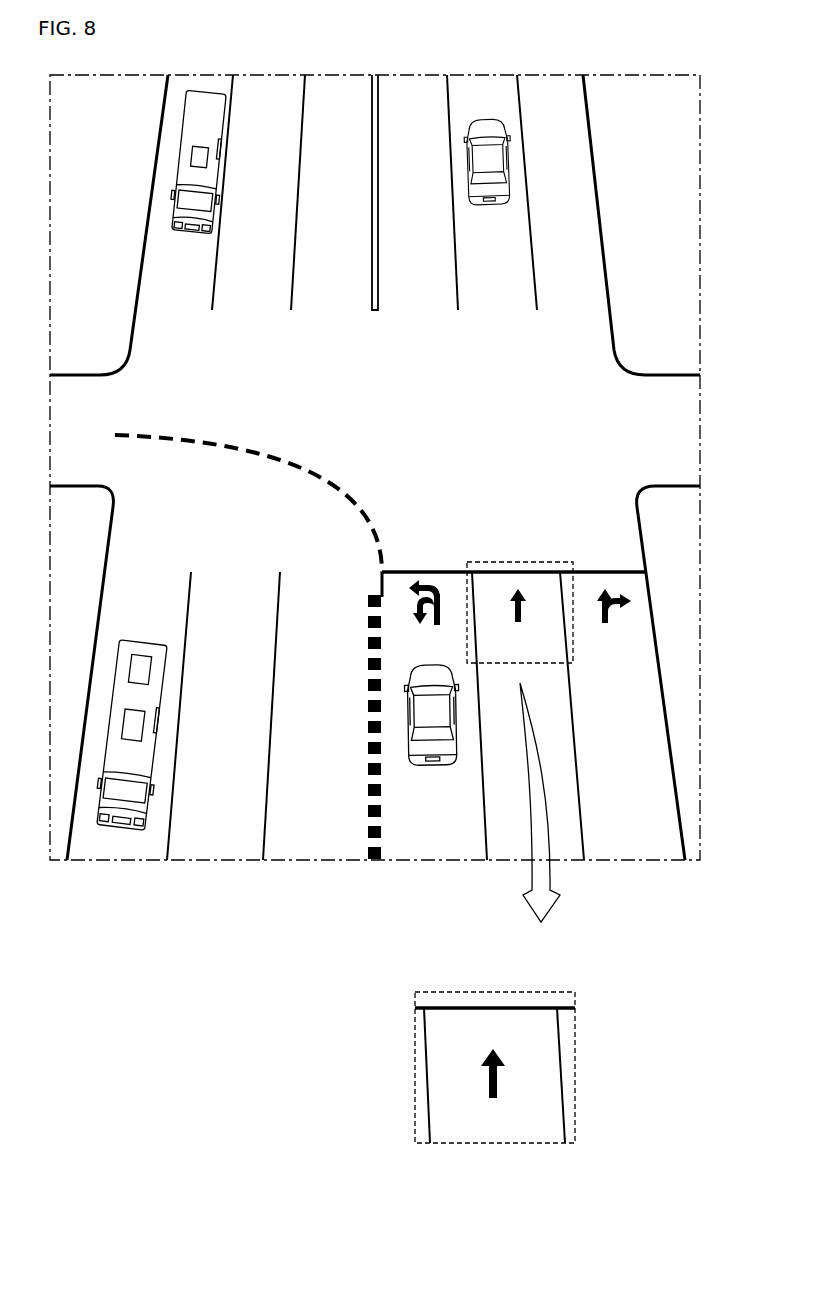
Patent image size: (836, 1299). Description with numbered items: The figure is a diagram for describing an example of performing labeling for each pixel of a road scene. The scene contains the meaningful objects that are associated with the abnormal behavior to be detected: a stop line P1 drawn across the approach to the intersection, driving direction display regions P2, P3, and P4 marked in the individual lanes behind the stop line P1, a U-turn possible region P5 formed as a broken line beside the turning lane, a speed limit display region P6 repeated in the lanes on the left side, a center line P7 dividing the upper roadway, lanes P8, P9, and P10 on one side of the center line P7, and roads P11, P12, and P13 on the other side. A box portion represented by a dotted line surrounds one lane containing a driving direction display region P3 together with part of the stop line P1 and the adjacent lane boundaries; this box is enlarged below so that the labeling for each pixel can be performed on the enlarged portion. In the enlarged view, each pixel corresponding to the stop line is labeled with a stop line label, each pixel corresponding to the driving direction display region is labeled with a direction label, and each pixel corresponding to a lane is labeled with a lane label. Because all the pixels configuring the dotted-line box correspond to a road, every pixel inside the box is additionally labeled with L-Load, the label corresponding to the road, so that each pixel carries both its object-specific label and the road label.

The stop line P1 is at (457, 571).
The driving direction display region P2 is at (438, 608).
The driving direction display region P3 is at (525, 610).
The driving direction display region P4 is at (612, 612).
The U-turn possible region P5 is at (367, 762).
The speed limit display region P6 is at (317, 590).
The center line P7 is at (380, 292).
The lane P8 is at (457, 293).
The lane P9 is at (535, 293).
The lane P10 is at (610, 293).
The road P11 is at (333, 290).
The road P12 is at (252, 290).
The road P13 is at (180, 290).
The road label L-Load is at (384, 1070).